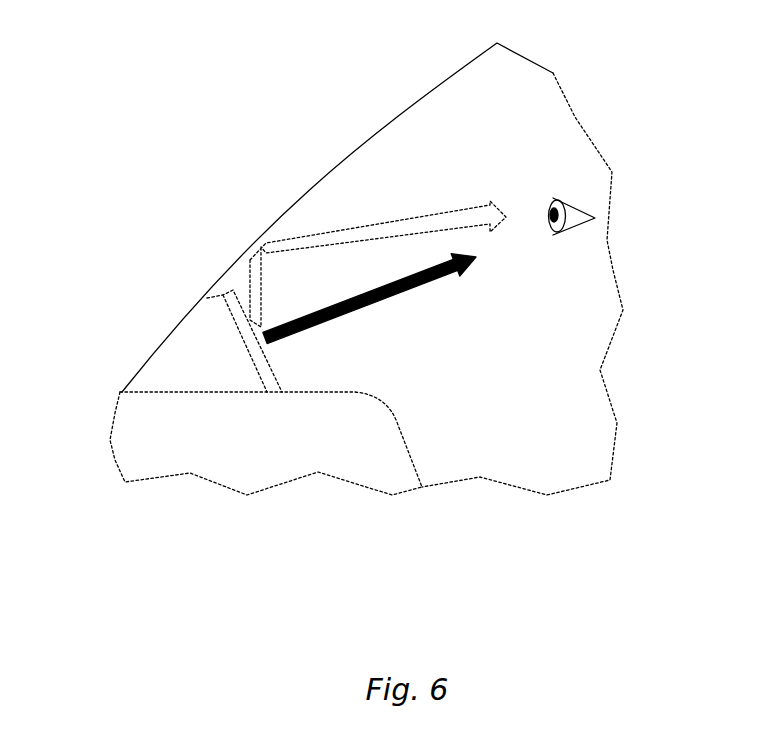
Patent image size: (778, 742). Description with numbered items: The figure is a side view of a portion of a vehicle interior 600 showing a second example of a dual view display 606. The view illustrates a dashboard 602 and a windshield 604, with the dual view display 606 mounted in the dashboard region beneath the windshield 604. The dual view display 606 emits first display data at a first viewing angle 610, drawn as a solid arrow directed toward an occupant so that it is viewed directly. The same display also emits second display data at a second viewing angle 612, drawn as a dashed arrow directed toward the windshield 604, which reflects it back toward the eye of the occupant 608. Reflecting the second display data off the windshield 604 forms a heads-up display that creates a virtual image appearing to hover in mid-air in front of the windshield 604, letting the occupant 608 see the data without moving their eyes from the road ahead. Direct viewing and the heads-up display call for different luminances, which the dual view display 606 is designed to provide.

The interior 600 is at (152, 82).
The dashboard 602 is at (302, 392).
The windshield 604 is at (350, 150).
The dual view display 606 is at (250, 357).
The occupant 608 is at (584, 178).
The first viewing angle 610 is at (378, 302).
The second viewing angle 612 is at (365, 230).